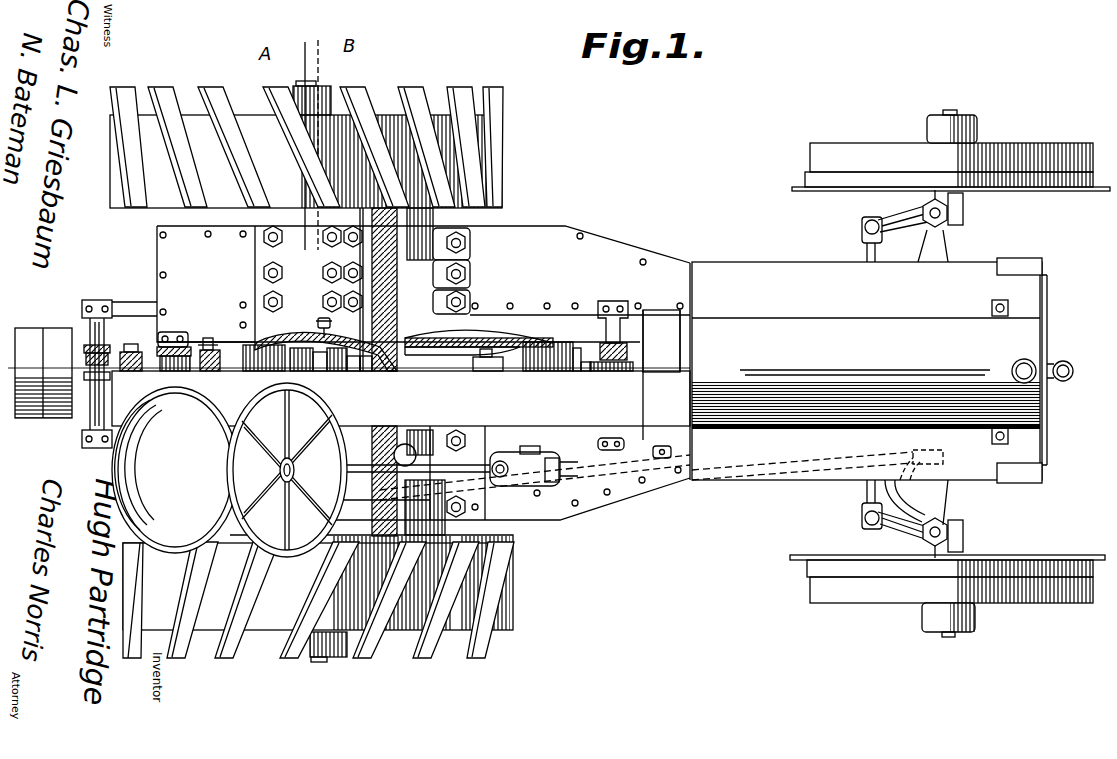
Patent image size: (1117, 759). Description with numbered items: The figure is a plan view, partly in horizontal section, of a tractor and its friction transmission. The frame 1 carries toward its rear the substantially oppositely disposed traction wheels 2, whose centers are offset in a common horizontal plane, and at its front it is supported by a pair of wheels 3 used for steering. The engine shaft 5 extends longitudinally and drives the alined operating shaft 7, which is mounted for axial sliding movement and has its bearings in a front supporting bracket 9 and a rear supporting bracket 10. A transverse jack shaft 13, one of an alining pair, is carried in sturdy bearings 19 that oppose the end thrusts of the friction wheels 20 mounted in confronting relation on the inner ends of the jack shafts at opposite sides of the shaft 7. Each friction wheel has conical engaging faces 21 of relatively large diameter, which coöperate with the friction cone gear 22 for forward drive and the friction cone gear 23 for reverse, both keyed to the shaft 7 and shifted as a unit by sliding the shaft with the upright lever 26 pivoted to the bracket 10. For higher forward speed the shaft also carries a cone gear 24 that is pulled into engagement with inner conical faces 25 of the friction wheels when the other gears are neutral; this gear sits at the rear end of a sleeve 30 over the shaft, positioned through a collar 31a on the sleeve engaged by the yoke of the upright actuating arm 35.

The frame 1 is at (119, 300).
The traction wheels 2 is at (384, 112).
The wheels 3 is at (857, 155).
The shaft 5 is at (637, 373).
The shaft 7 is at (582, 373).
The supporting bracket 9 is at (637, 358).
The supporting bracket 10 is at (146, 351).
The jack shaft 13 is at (462, 278).
The bearings 19 is at (466, 254).
The friction wheels 20 is at (513, 335).
The conical engaging faces 21 is at (268, 340).
The friction cone gear 22 is at (275, 337).
The friction cone gear 23 is at (560, 342).
The cone gear 24 is at (345, 373).
The conical faces 25 is at (386, 373).
The upright lever 26 is at (182, 332).
The sleeve 30 is at (430, 373).
The collar 31a is at (488, 362).
The upright actuating arm 35 is at (492, 360).